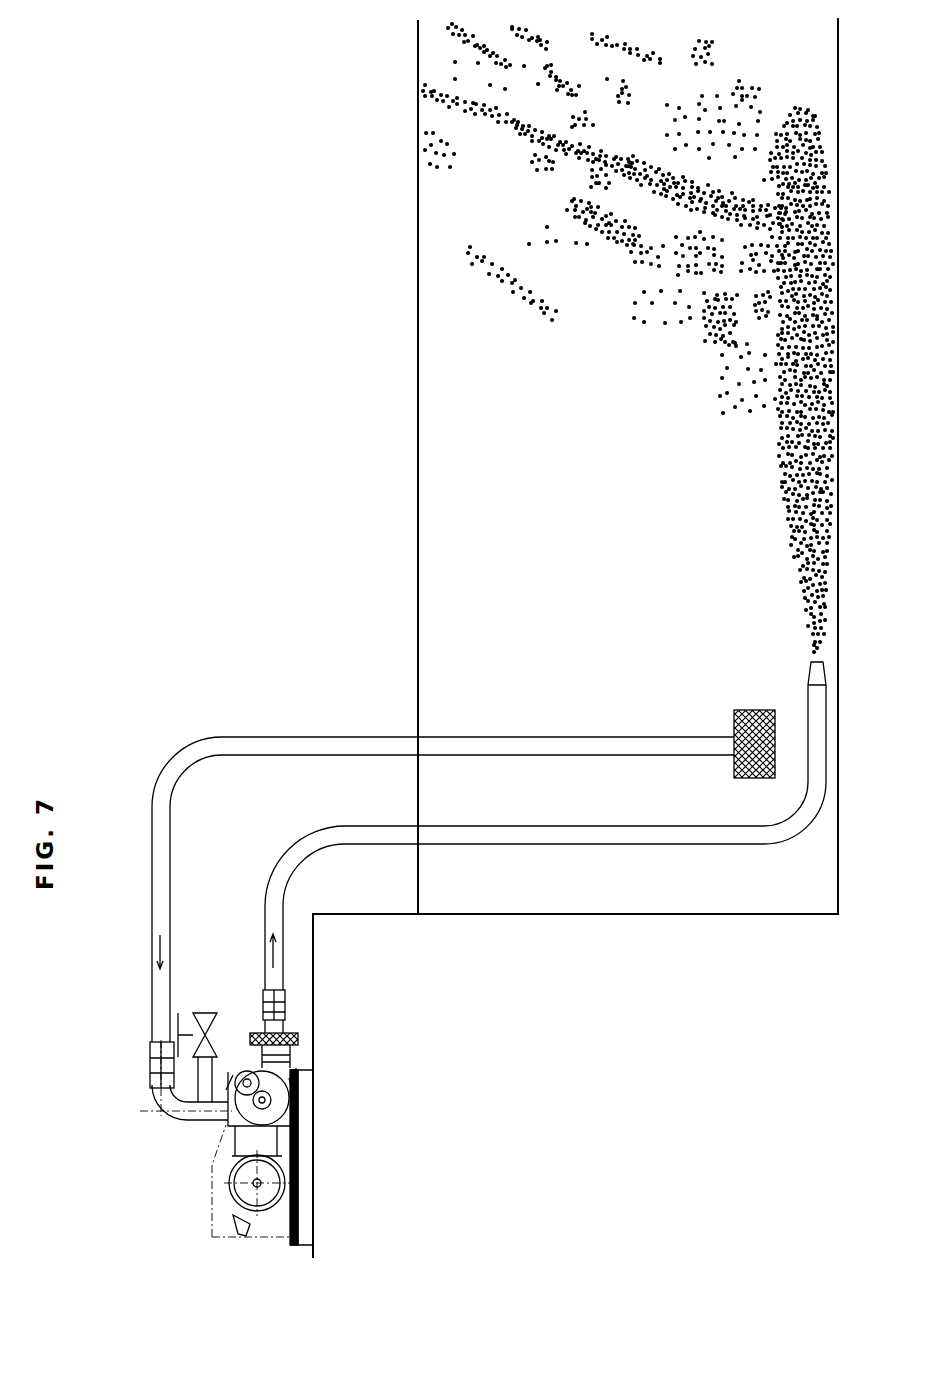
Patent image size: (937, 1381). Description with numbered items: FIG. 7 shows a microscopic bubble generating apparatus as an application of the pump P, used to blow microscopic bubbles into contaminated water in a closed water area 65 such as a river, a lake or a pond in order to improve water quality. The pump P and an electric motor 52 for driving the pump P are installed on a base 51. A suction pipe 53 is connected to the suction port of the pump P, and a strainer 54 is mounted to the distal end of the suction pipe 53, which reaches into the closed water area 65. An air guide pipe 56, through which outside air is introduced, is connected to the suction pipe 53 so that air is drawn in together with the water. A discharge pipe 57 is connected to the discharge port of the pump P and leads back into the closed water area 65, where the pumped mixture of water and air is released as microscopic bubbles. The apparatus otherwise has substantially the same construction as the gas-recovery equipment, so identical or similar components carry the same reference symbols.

The base 51 is at (310, 1219).
The electric motor 52 is at (283, 1177).
The suction pipe 53 is at (152, 1007).
The strainer 54 is at (776, 727).
The air guide pipe 56 is at (200, 1067).
The discharge pipe 57 is at (285, 987).
The closed water area 65 is at (832, 854).
The pump P is at (290, 1097).